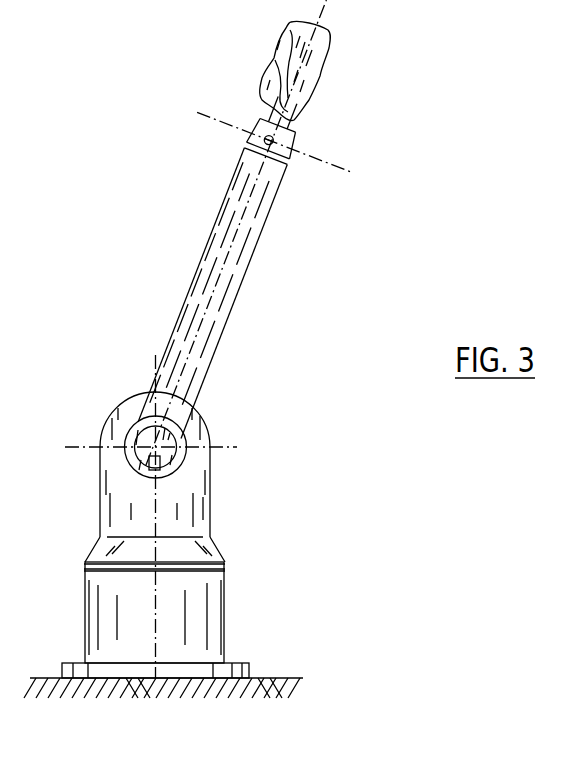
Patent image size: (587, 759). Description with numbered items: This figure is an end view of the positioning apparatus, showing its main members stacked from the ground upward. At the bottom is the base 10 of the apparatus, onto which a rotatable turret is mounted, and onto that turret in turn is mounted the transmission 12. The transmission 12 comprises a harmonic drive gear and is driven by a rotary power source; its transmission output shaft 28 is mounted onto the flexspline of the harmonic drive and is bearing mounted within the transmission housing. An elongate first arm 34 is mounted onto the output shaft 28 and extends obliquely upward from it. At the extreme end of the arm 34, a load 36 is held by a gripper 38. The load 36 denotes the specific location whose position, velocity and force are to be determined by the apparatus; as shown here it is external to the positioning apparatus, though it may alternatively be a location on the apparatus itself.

The base 10 is at (221, 630).
The transmission 12 is at (201, 503).
The transmission output shaft 28 is at (146, 432).
The first arm 34 is at (226, 303).
The load 36 is at (329, 50).
The gripper 38 is at (274, 141).